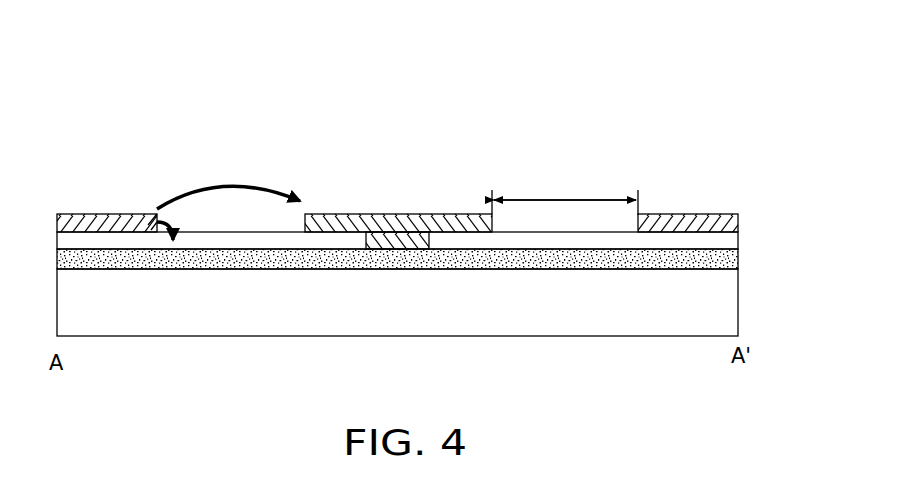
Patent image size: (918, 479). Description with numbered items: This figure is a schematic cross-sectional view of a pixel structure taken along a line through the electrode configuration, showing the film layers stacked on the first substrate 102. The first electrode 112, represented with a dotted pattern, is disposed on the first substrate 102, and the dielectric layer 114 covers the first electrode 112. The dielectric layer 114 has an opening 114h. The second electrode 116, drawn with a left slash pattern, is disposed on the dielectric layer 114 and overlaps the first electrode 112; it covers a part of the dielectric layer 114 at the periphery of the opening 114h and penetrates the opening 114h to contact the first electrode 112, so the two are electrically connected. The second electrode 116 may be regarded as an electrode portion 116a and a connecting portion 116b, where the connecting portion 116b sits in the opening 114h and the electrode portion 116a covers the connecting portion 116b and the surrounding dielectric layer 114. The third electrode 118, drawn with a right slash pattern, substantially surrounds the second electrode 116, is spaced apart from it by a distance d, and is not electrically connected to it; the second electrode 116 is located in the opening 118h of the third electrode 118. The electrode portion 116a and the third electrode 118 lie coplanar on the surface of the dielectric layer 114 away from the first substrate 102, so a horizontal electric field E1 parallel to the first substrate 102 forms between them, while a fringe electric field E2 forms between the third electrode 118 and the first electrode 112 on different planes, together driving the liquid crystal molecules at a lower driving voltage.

The first substrate 102 is at (730, 303).
The first electrode 112 is at (732, 262).
The dielectric layer 114 is at (730, 243).
The opening 114h is at (430, 243).
The second electrode 116 is at (437, 158).
The electrode portion 116a is at (337, 220).
The connecting portion 116b is at (391, 243).
The third electrode 118 is at (110, 219).
The opening 118h is at (140, 228).
The horizontal electric field E1 is at (232, 187).
The fringe electric field E2 is at (193, 225).
The distance d is at (567, 200).